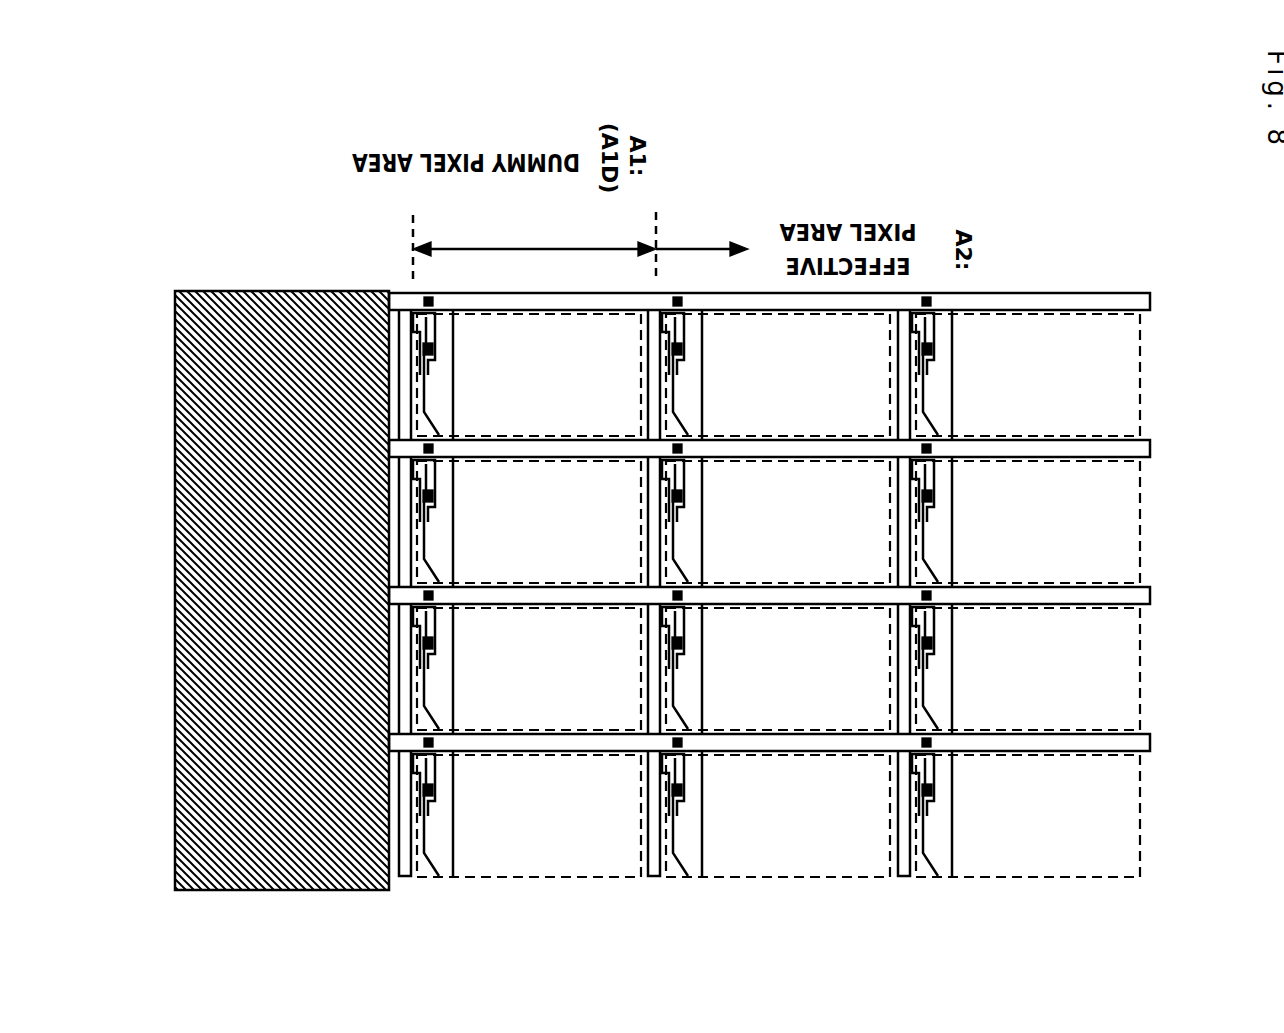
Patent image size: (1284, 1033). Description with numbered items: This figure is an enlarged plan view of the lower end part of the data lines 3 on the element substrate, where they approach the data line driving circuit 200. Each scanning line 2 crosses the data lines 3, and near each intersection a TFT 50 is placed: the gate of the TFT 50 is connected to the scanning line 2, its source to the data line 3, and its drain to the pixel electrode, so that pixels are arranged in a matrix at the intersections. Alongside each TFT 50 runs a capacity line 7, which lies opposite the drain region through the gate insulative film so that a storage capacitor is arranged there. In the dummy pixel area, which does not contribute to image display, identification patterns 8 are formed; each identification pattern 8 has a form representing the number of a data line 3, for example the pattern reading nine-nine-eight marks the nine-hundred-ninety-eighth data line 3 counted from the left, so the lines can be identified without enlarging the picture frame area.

The scanning line 2 is at (897, 911).
The data line 3 is at (1168, 742).
The capacity line 7 is at (944, 912).
The identification pattern 8 is at (486, 843).
The TFT 50 is at (948, 800).
The data line driving circuit 200 is at (175, 578).